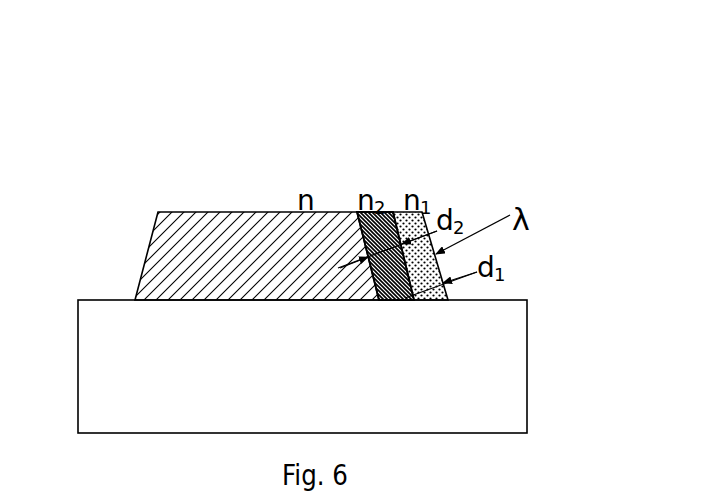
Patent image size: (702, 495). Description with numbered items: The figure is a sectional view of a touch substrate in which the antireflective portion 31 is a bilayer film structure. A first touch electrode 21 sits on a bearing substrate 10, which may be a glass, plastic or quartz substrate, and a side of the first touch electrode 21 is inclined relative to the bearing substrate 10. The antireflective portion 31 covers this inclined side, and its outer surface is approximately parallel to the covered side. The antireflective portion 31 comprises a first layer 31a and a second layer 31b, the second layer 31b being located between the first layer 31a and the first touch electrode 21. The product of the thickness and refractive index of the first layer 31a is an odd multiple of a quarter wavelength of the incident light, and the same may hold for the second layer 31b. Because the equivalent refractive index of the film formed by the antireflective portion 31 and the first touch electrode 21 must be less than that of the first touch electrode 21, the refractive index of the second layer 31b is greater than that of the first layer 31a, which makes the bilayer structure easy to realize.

The bearing substrate 10 is at (468, 407).
The first touch electrode 21 is at (220, 275).
The antireflective portion 31 is at (304, 209).
The first layer 31a is at (403, 245).
The second layer 31b is at (405, 296).